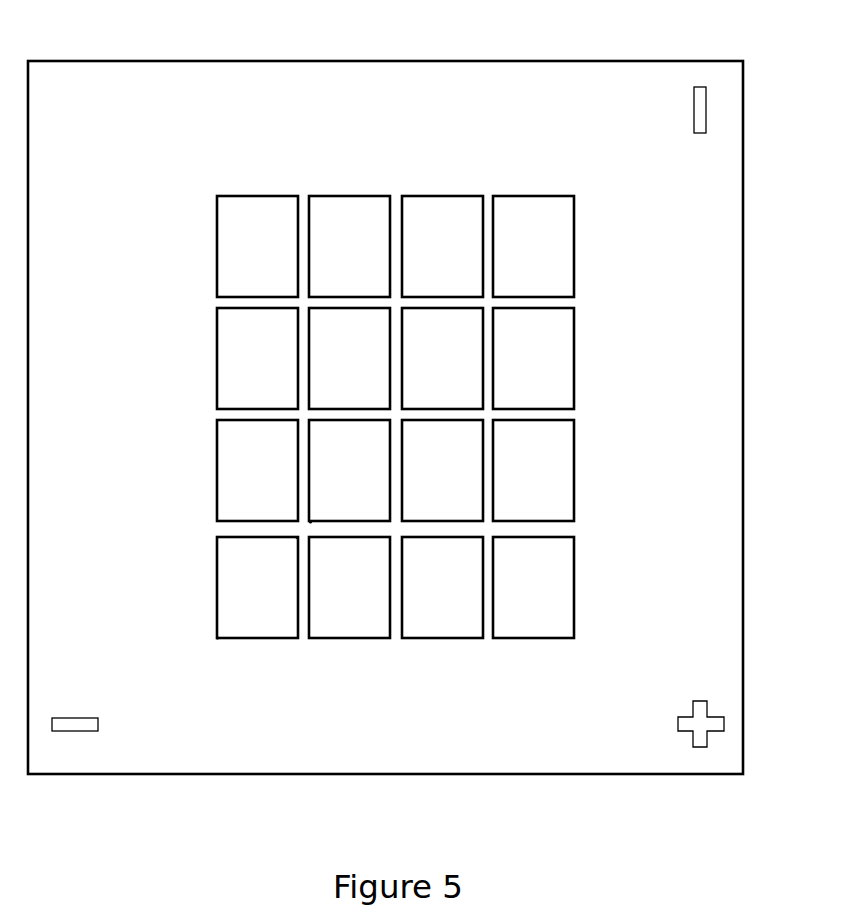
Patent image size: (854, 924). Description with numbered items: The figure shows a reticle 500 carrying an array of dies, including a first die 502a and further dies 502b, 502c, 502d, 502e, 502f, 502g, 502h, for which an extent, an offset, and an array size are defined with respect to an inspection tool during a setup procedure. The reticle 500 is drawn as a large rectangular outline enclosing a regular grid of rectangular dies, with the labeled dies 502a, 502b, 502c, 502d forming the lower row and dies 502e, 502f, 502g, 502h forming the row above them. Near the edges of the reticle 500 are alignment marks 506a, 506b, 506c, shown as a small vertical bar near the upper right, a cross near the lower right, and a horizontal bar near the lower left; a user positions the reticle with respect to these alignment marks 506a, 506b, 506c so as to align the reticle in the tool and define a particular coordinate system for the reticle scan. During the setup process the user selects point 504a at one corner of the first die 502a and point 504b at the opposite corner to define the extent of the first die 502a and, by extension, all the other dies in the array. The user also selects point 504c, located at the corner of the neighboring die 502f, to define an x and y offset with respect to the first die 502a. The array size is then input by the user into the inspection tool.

The reticle 500 is at (565, 61).
The first die 502a is at (257, 587).
The die 502b is at (349, 587).
The die 502c is at (442, 587).
The die 502d is at (533, 587).
The die 502e is at (257, 470).
The die 502f is at (349, 470).
The die 502g is at (442, 470).
The die 502h is at (533, 470).
The point 504a is at (218, 638).
The point 504b is at (297, 538).
The point 504c is at (310, 522).
The alignment mark 506a is at (702, 110).
The alignment mark 506b is at (678, 718).
The alignment mark 506c is at (80, 724).